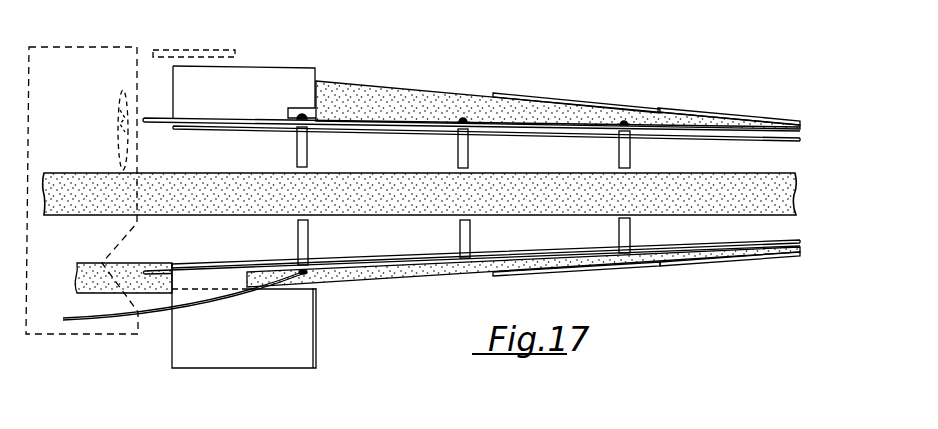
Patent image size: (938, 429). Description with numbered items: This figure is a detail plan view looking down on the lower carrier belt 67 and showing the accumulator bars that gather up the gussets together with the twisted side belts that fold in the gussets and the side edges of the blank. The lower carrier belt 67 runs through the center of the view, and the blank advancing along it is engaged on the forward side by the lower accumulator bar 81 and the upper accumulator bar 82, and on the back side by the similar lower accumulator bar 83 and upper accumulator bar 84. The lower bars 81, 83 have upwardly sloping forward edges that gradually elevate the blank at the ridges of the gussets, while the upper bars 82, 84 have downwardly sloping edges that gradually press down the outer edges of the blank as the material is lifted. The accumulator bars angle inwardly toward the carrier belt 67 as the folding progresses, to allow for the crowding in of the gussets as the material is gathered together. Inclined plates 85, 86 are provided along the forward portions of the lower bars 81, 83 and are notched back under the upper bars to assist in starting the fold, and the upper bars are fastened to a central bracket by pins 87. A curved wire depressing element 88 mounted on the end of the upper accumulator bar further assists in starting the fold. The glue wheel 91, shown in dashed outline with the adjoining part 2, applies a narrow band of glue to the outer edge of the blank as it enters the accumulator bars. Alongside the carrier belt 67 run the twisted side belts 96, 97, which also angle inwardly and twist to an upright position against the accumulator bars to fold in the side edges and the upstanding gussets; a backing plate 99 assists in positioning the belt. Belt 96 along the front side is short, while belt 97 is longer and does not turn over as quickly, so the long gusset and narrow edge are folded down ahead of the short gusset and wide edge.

The cabinet enclosure 2 is at (83, 47).
The glue wheel 91 is at (203, 52).
The inclined plate 86 is at (262, 76).
The upper accumulator bar 84 is at (402, 127).
The lower accumulator bar 83 is at (437, 135).
The pin 87 is at (305, 150).
The backing plate 99 is at (590, 105).
The twisted side belt 97 is at (693, 122).
The lower carrier belt 67 is at (247, 205).
The lower accumulator bar 81 is at (358, 258).
The upper accumulator bar 82 is at (407, 262).
The curved wire depressing element 88 is at (113, 318).
The inclined plate 85 is at (238, 358).
The twisted side belt 96 is at (762, 255).